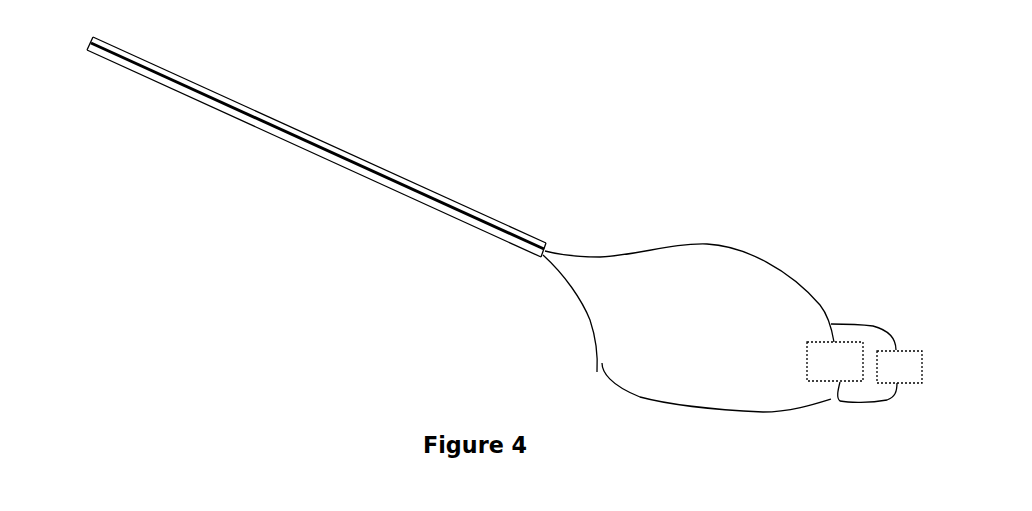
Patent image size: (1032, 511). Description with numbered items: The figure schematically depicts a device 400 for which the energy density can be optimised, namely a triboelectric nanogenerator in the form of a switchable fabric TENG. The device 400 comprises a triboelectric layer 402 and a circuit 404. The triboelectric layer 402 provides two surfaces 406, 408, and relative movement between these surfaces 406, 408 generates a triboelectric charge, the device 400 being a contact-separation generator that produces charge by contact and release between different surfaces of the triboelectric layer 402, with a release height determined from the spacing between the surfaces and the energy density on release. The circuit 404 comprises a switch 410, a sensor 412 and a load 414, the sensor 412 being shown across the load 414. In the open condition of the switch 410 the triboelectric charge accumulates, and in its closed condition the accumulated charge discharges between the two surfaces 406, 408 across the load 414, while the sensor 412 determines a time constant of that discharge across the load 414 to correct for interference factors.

The device 400 is at (578, 184).
The triboelectric layer 402 is at (288, 143).
The circuit 404 is at (724, 327).
The surface 406 is at (193, 81).
The surface 408 is at (181, 94).
The switch 410 is at (570, 318).
The sensor 412 is at (899, 367).
The load 414 is at (835, 361).